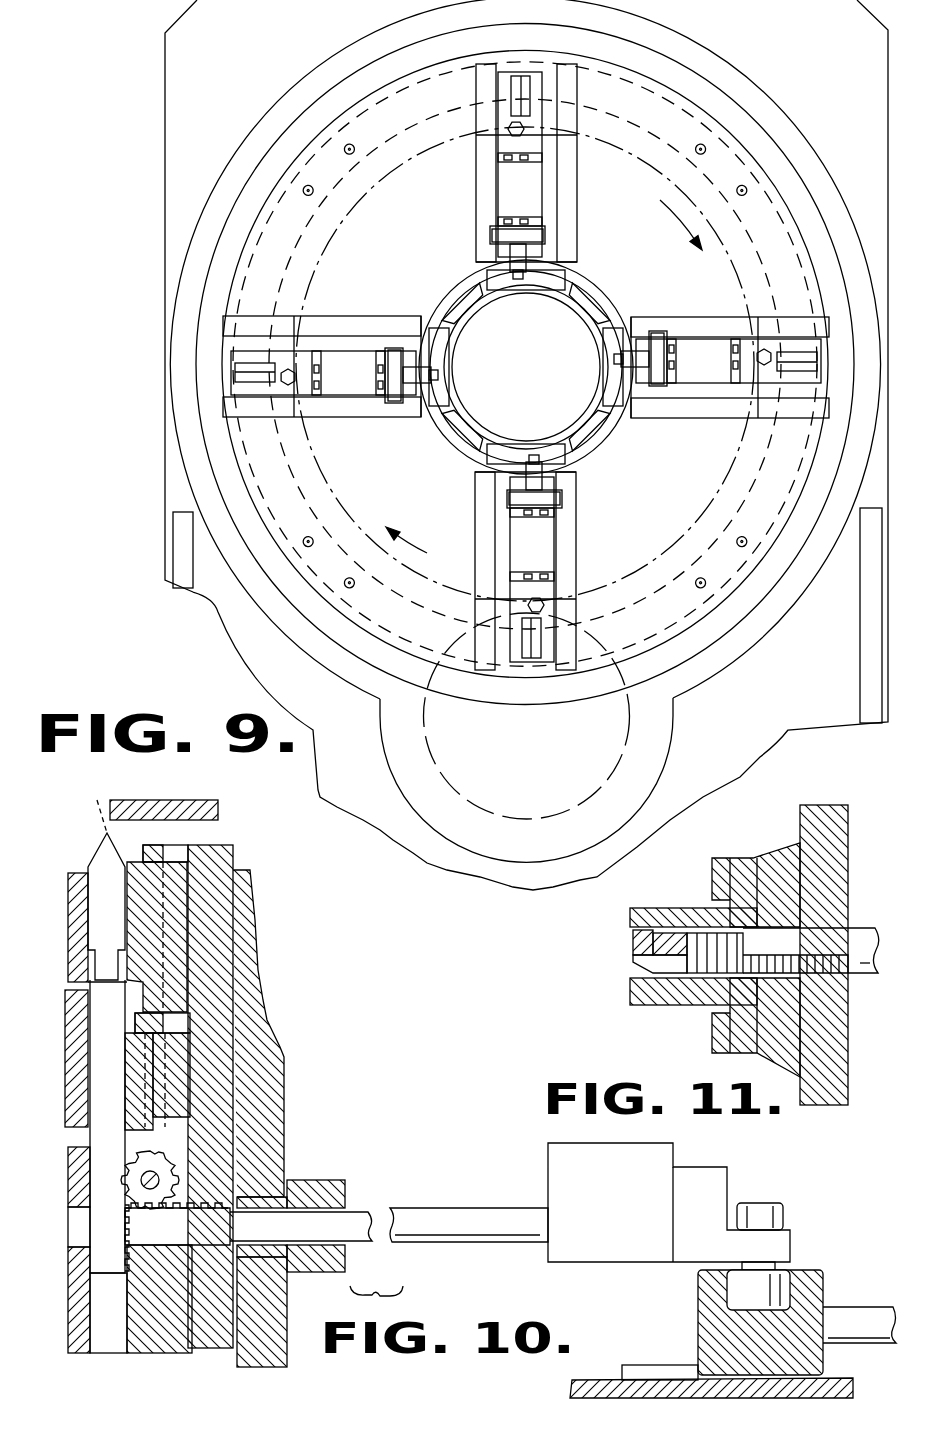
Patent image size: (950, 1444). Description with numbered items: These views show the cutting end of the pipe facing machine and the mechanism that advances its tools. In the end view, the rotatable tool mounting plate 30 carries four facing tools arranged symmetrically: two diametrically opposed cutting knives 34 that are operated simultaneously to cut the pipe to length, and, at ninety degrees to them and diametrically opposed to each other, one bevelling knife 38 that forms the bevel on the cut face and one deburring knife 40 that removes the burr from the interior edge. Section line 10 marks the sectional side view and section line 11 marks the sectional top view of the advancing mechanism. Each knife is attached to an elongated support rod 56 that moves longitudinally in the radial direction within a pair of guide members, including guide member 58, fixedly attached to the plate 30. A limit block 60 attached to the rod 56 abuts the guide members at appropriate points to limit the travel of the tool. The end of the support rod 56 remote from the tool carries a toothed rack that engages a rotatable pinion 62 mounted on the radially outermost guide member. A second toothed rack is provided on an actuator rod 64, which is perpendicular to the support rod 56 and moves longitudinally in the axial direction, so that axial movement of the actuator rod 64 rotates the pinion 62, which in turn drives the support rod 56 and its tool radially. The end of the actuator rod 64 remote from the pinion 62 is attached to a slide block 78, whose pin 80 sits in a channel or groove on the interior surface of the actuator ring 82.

In FIG. 9, the section line 10- 10 is at (535, 372).
In FIG. 10, the section line 11- 11 is at (45, 1153).
In FIG. 10, the tool mounting plate 30 is at (233, 856).
In FIG. 9, the cutting knives 34 is at (423, 372).
In FIG. 9, the bevelling knife 38 is at (527, 460).
In FIG. 9, the deburring knife 40 is at (523, 265).
In FIG. 10, the support rod 56 is at (100, 963).
In FIG. 11, the support rod 56 is at (650, 961).
In FIG. 10, the guide member 58 is at (68, 918).
In FIG. 11, the guide member 58 is at (678, 1005).
In FIG. 10, the limit block 60 is at (72, 1032).
In FIG. 10, the pinion 62 is at (177, 1170).
In FIG. 11, the pinion 62 is at (697, 943).
In FIG. 10, the actuator rod 64 is at (357, 1218).
In FIG. 11, the actuator rod 64 is at (867, 937).
In FIG. 10, the slide block 78 is at (548, 1157).
In FIG. 10, the pin 80 is at (737, 1290).
In FIG. 10, the actuator ring 82 is at (817, 1287).